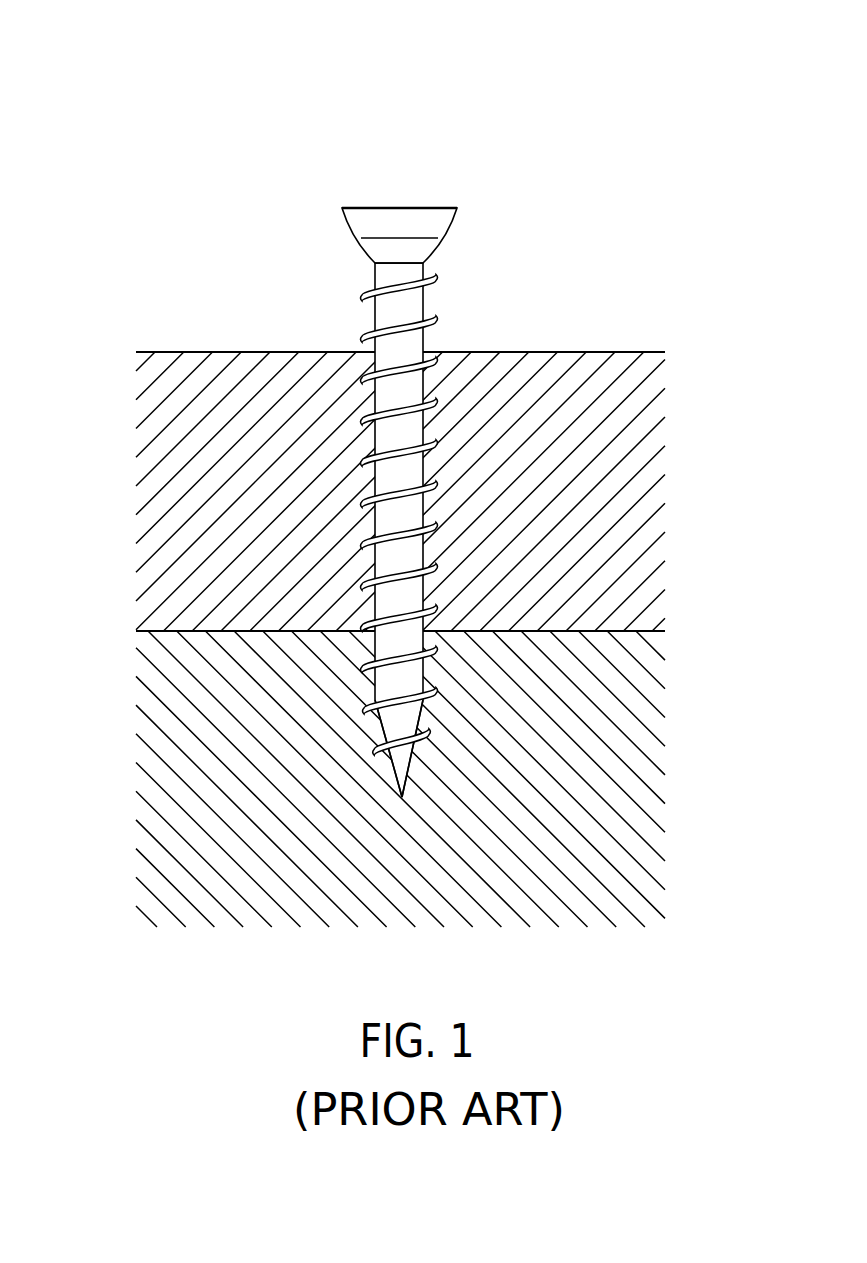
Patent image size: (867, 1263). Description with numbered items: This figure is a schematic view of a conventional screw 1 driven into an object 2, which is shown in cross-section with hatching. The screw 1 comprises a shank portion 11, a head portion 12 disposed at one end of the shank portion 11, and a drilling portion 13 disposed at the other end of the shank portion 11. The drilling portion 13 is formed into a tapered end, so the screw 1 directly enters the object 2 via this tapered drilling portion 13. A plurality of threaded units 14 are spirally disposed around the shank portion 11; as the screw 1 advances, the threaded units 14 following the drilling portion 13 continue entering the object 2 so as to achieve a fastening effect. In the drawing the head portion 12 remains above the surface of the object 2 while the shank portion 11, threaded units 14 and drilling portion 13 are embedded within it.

The conventional screw 1 is at (415, 437).
The object 2 is at (549, 352).
The shank portion 11 is at (375, 313).
The head portion 12 is at (455, 212).
The drilling portion 13 is at (417, 753).
The threaded units 14 is at (428, 563).